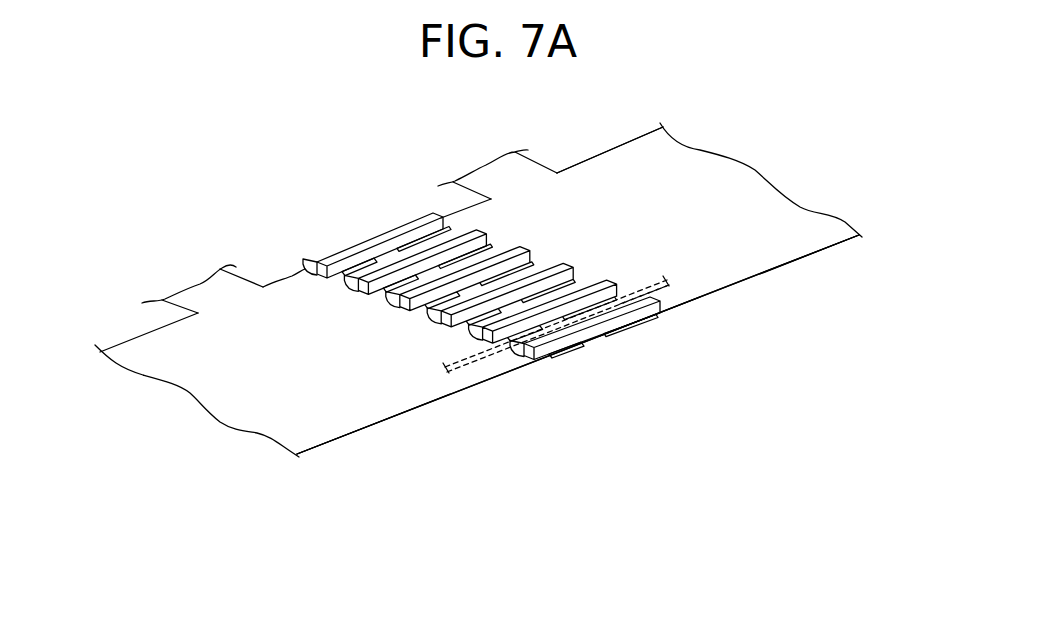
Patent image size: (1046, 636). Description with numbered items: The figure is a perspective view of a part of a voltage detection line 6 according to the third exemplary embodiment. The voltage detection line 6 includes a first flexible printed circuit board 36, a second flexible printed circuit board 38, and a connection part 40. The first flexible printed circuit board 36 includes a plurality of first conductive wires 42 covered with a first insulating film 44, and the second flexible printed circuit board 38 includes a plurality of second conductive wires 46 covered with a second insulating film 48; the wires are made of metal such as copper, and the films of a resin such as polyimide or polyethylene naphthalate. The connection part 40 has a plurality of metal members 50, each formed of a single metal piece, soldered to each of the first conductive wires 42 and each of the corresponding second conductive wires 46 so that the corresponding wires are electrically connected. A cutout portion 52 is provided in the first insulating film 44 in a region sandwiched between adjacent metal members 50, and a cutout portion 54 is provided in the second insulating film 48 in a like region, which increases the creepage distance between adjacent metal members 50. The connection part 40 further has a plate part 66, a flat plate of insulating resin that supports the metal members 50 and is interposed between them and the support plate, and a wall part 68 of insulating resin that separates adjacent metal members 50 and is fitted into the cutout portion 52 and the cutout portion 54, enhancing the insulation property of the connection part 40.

The voltage detection line 6 is at (597, 558).
The first flexible printed circuit board 36 is at (352, 444).
The second flexible printed circuit board 38 is at (845, 260).
The connection part 40 is at (639, 369).
The first conductive wire 42 is at (490, 362).
The first insulating film 44 is at (380, 400).
The second conductive wire 46 is at (664, 287).
The second insulating film 48 is at (750, 260).
The metal member 50 is at (394, 258).
The cutout portion 52 is at (305, 272).
The cutout portion 54 is at (660, 314).
The plate part 66 is at (585, 347).
The wall part 68 is at (347, 252).